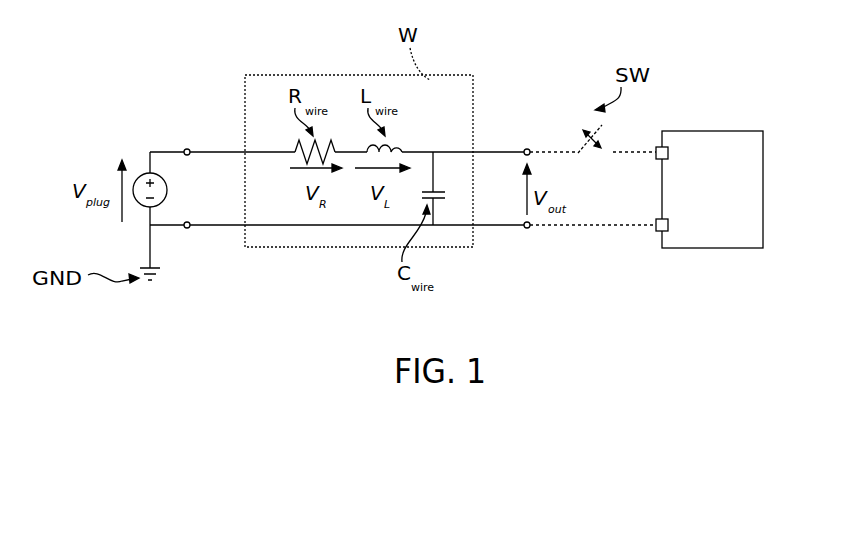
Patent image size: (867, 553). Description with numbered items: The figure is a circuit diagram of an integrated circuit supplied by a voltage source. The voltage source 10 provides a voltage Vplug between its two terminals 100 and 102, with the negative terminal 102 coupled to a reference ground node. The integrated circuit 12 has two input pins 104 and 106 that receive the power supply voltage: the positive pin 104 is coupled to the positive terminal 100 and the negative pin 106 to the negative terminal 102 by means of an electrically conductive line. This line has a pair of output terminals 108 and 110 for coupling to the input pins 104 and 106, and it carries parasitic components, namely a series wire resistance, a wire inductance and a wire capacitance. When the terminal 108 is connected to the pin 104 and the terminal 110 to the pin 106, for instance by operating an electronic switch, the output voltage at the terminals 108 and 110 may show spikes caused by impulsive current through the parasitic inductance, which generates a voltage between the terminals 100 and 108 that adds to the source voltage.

The voltage source 10 is at (167, 190).
The integrated circuit 12 is at (752, 135).
The positive terminal 100 is at (186, 148).
The negative terminal 102 is at (189, 229).
The positive input pin 104 is at (656, 159).
The negative input pin 106 is at (656, 231).
The output terminal 108 is at (526, 148).
The output terminal 110 is at (528, 229).